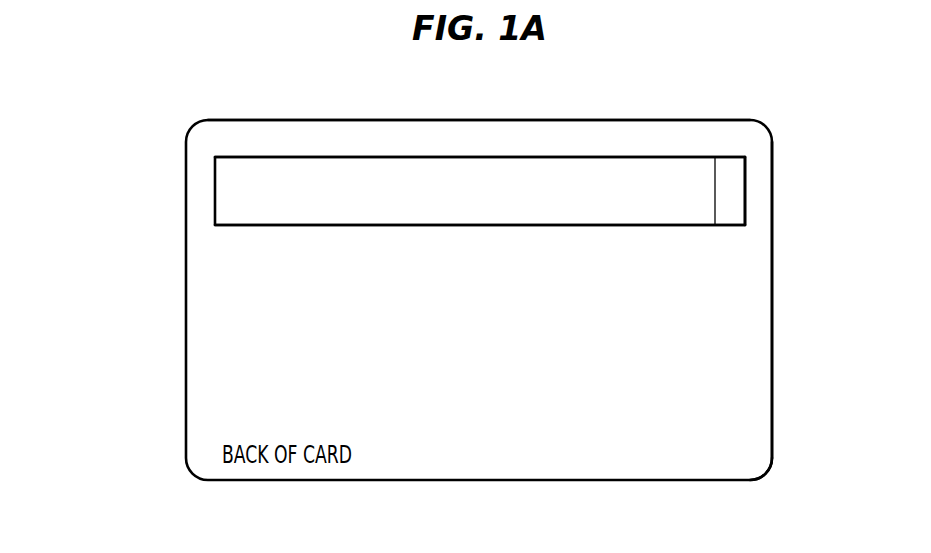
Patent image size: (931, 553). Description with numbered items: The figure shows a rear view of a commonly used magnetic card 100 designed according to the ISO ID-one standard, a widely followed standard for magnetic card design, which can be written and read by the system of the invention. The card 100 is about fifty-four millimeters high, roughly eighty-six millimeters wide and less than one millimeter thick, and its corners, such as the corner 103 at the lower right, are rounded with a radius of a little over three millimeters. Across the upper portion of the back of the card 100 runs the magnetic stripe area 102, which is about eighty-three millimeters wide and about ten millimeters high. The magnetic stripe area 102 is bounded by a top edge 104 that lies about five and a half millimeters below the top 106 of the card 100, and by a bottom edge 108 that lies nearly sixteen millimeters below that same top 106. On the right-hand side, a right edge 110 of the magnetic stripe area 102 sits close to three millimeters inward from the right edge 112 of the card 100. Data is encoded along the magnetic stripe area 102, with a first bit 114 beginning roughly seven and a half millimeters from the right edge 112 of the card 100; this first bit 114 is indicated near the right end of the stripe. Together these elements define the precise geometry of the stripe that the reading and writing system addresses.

The magnetic card 100 is at (127, 433).
The magnetic stripe area 102 is at (408, 210).
The corner 103 is at (770, 462).
The top edge 104 is at (692, 157).
The top 106 is at (627, 120).
The bottom edge 108 is at (552, 226).
The right edge 110 is at (747, 168).
The right edge 112 is at (772, 177).
The first bit 114 is at (715, 195).